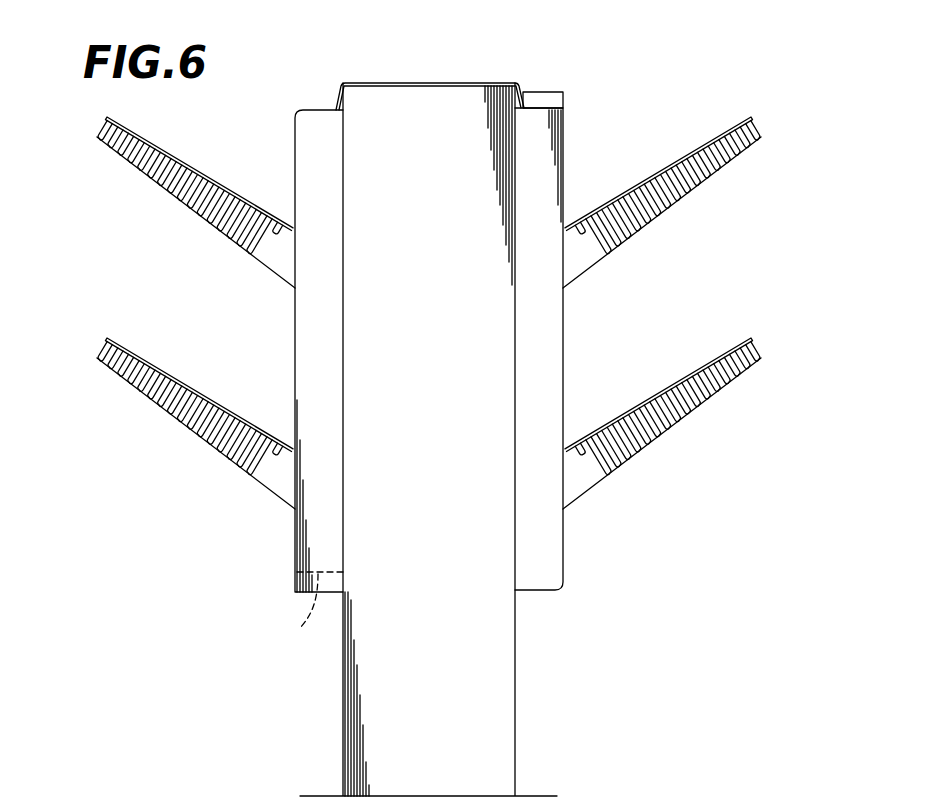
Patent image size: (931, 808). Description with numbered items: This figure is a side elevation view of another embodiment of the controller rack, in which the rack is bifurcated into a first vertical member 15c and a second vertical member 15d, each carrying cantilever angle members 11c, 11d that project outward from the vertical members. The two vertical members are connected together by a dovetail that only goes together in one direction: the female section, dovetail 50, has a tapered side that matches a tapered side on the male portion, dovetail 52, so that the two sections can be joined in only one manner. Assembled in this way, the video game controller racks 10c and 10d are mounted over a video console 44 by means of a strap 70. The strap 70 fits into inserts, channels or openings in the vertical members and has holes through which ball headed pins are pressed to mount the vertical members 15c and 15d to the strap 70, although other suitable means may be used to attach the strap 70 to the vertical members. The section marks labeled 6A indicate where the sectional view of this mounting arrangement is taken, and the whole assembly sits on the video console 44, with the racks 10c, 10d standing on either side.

The strap 70 is at (402, 83).
The dovetail 52 is at (548, 92).
The section line 6A is at (328, 78).
The video console 44 is at (503, 713).
The first vertical member 15c is at (297, 368).
The second vertical member 15d is at (563, 365).
The heat sink fin 11c is at (100, 347).
The heat sink fin 11d is at (763, 343).
The video game controller rack 10c is at (183, 351).
The video game controller rack 10d is at (679, 349).
The dovetail 50 is at (300, 628).